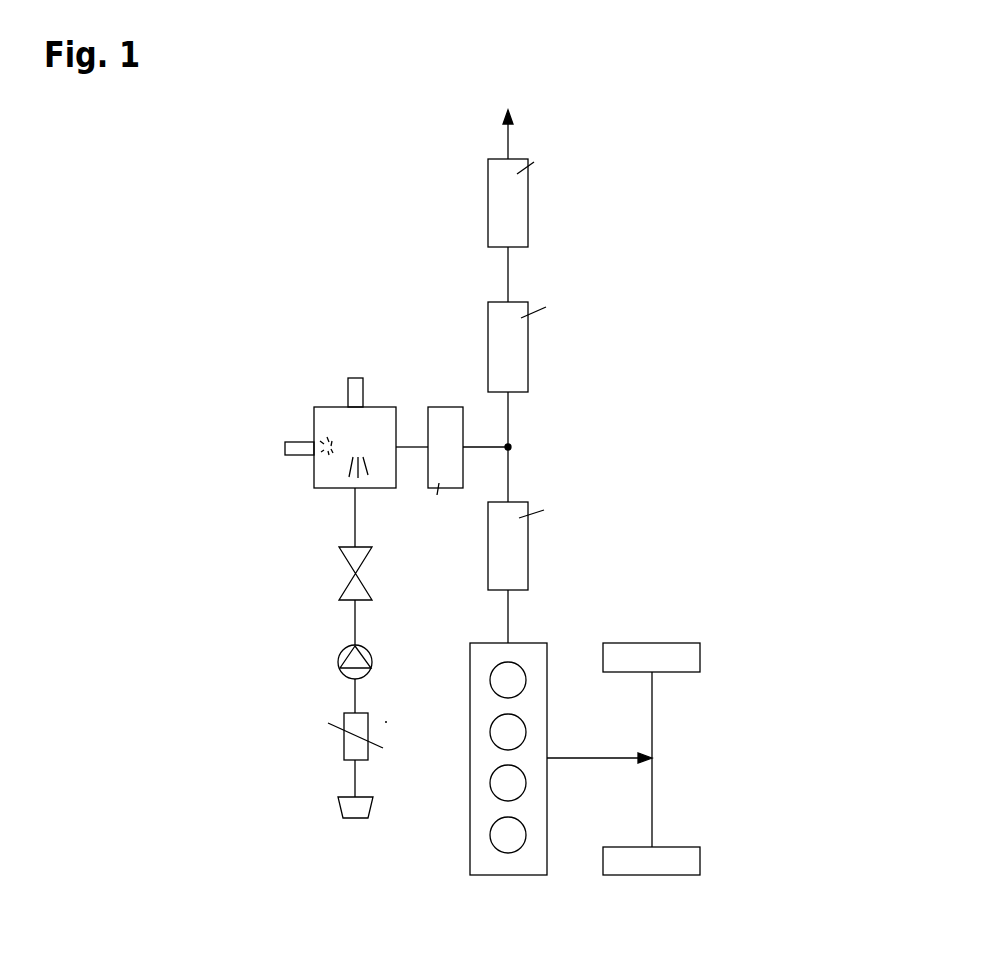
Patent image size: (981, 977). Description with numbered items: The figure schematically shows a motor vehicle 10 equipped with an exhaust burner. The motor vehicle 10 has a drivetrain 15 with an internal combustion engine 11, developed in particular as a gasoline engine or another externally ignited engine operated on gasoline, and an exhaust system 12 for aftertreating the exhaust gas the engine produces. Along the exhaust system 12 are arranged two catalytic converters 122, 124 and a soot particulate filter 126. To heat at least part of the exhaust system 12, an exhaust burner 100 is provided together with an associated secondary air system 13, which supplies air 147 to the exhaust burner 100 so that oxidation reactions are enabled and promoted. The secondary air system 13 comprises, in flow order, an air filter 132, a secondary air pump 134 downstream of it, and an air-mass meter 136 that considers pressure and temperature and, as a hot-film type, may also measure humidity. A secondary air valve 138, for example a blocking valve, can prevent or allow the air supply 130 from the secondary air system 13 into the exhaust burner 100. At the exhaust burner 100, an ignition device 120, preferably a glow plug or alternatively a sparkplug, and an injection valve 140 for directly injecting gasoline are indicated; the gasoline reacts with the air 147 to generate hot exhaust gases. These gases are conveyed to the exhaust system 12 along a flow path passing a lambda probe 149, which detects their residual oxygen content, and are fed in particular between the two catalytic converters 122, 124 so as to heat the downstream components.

The motor vehicle 10 is at (275, 268).
The internal combustion engine 11 is at (547, 710).
The exhaust system 12 is at (537, 561).
The secondary air system 13 is at (232, 880).
The drivetrain 15 is at (712, 763).
The exhaust burner 100 is at (314, 410).
The ignition device 120 is at (353, 378).
The catalytic converter 122 is at (528, 543).
The catalytic converter 124 is at (528, 343).
The soot particulate filter 126 is at (528, 200).
The air supply 130 is at (355, 524).
The air filter 132 is at (338, 806).
The secondary air pump 134 is at (344, 740).
The air-mass meter 136 is at (338, 662).
The secondary air valve 138 is at (338, 565).
The injection valve 140 is at (285, 448).
The air 147 is at (346, 465).
The lambda probe 149 is at (447, 407).